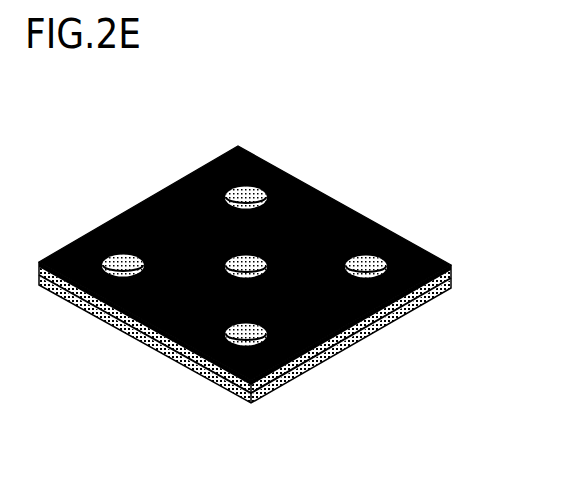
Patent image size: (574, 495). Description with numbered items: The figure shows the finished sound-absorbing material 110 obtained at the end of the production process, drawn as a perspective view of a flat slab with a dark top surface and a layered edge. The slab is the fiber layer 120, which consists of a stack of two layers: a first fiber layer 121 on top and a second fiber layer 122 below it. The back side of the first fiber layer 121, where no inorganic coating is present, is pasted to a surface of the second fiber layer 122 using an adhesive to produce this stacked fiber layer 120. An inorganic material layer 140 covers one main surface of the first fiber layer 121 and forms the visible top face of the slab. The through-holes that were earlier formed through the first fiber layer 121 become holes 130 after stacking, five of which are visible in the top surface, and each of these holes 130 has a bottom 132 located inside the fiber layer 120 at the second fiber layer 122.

The sound-absorbing material 110 is at (129, 163).
The fiber layer 120 is at (112, 399).
The first fiber layer 121 is at (91, 303).
The second fiber layer 122 is at (139, 337).
The holes 130 is at (255, 175).
The bottoms 132 is at (220, 176).
The inorganic material layer 140 is at (340, 215).